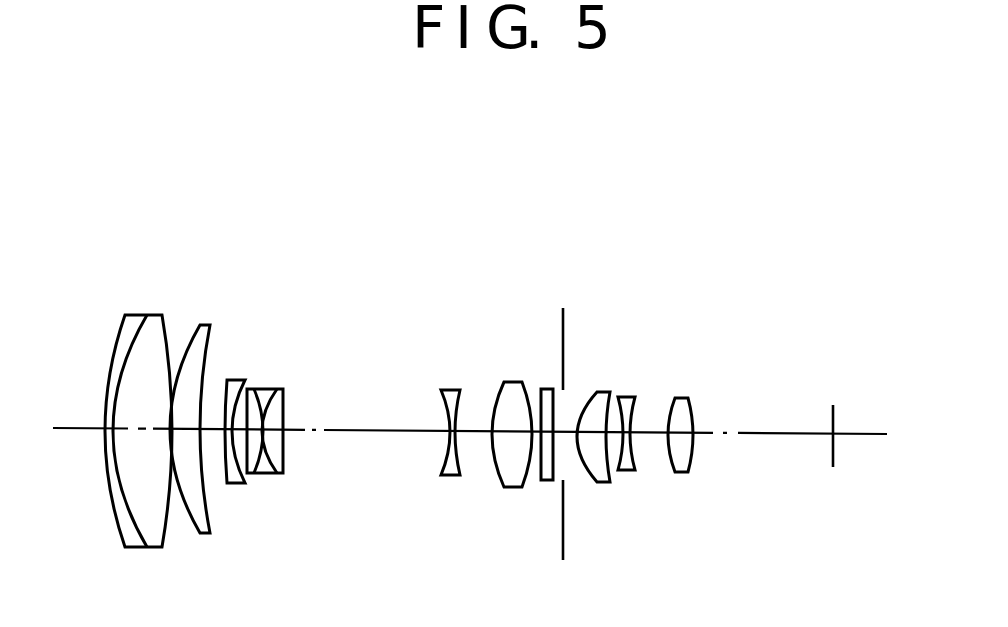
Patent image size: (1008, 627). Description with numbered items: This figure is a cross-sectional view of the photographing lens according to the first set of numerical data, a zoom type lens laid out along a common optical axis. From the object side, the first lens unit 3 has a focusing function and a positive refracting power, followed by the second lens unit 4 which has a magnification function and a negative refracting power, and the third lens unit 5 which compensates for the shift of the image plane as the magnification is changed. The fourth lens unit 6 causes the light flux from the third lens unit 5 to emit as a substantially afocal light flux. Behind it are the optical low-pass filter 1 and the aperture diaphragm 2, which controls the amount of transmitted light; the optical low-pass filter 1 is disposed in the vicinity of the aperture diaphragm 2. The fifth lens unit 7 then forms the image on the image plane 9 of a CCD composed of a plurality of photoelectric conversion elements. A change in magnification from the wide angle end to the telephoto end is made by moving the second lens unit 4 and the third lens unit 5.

The optical low-pass filter 1 is at (547, 388).
The aperture diaphragm 2 is at (564, 308).
The first lens unit 3 is at (108, 188).
The second lens unit 4 is at (293, 188).
The third lens unit 5 is at (415, 190).
The fourth lens unit 6 is at (513, 380).
The fifth lens unit 7 is at (722, 190).
The image plane 9 is at (834, 415).